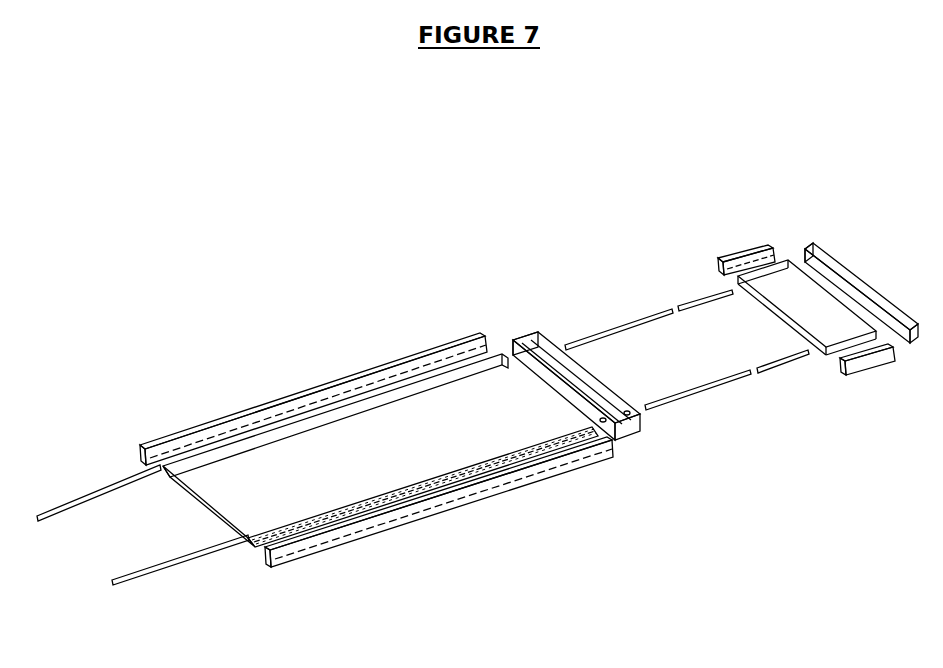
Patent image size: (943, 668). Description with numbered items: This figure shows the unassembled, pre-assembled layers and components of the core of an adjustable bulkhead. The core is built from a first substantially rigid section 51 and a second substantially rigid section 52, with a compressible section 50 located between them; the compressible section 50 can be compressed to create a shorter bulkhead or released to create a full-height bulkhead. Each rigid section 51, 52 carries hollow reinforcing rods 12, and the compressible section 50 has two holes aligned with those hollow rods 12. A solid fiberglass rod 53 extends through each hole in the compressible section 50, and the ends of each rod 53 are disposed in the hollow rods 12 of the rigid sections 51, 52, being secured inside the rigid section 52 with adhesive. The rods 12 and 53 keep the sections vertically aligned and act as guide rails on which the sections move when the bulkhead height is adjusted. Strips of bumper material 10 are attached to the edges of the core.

The bumper material 10 is at (400, 365).
The hollow reinforcing rod 12 is at (98, 505).
The compressible section 50 is at (632, 432).
The first substantially rigid section 51 is at (538, 453).
The second substantially rigid section 52 is at (795, 290).
The rod 53 is at (602, 332).